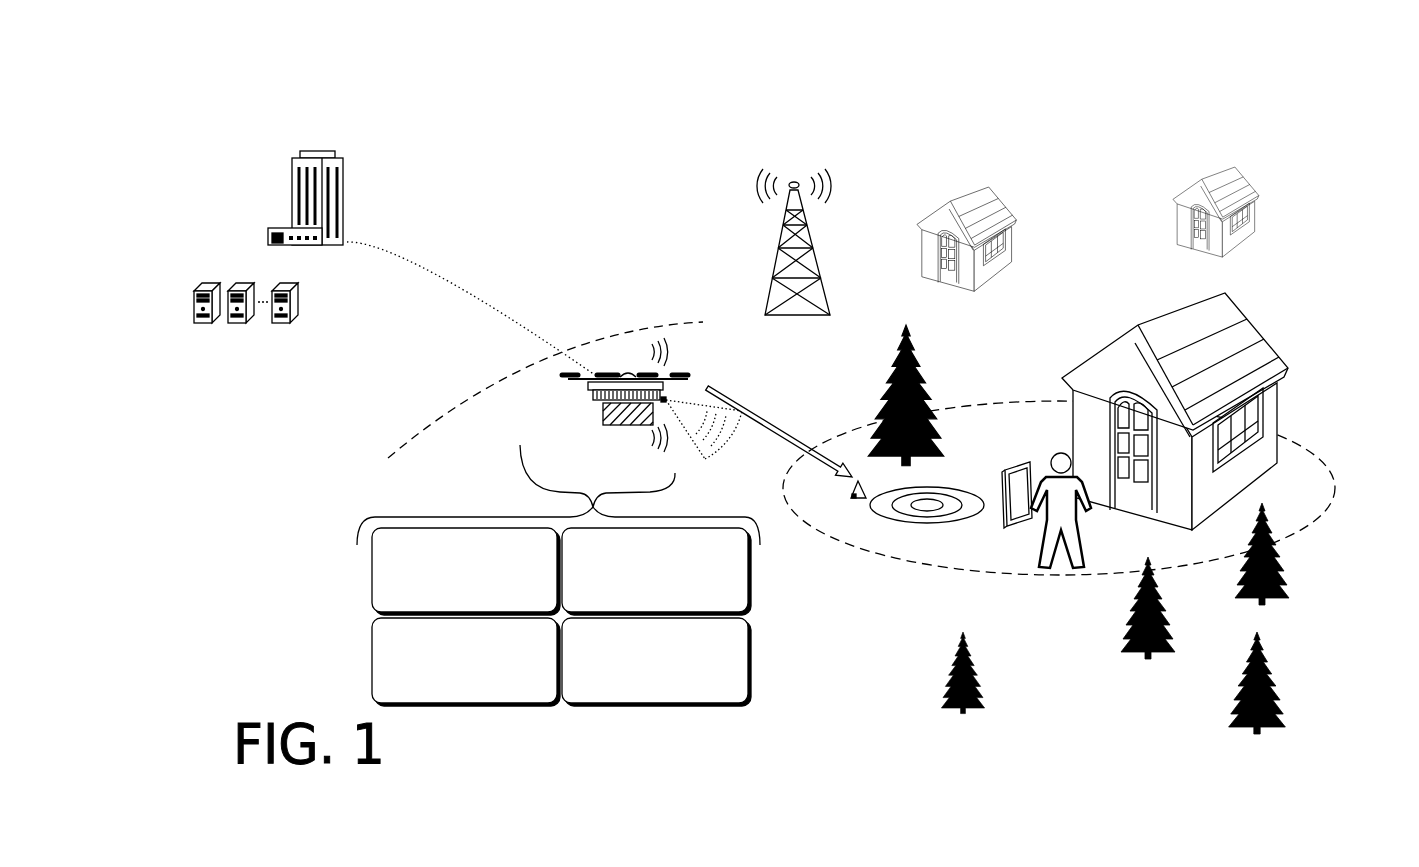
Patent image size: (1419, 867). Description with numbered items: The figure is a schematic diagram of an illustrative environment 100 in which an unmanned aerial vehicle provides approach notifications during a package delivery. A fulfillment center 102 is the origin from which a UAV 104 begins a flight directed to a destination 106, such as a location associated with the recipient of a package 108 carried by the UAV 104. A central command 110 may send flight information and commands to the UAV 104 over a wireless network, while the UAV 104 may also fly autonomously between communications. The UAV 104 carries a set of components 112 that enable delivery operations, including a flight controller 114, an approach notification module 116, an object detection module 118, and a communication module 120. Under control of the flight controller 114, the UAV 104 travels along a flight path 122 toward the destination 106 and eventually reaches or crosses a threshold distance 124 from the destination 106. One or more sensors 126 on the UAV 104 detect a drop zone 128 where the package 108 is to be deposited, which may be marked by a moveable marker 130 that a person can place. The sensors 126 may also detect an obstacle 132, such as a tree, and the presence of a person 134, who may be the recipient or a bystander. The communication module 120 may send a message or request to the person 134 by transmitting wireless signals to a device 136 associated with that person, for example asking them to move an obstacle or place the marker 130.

The environment 100 is at (428, 80).
The fulfillment center 102 is at (249, 211).
The unmanned aerial vehicle 104 is at (618, 398).
The destination 106 is at (1059, 434).
The package 108 is at (595, 419).
The central command 110 is at (247, 329).
The components 112 is at (323, 517).
The flight controller 114 is at (466, 571).
The approach notification module 116 is at (466, 662).
The object detection module 118 is at (656, 571).
The communication module 120 is at (656, 662).
The flight path 122 is at (471, 308).
The threshold distance 124 is at (513, 390).
The sensors 126 is at (758, 408).
The drop zone 128 is at (912, 535).
The marker 130 is at (818, 524).
The obstacle 132 is at (872, 395).
The person 134 is at (1035, 534).
The device 136 is at (958, 538).